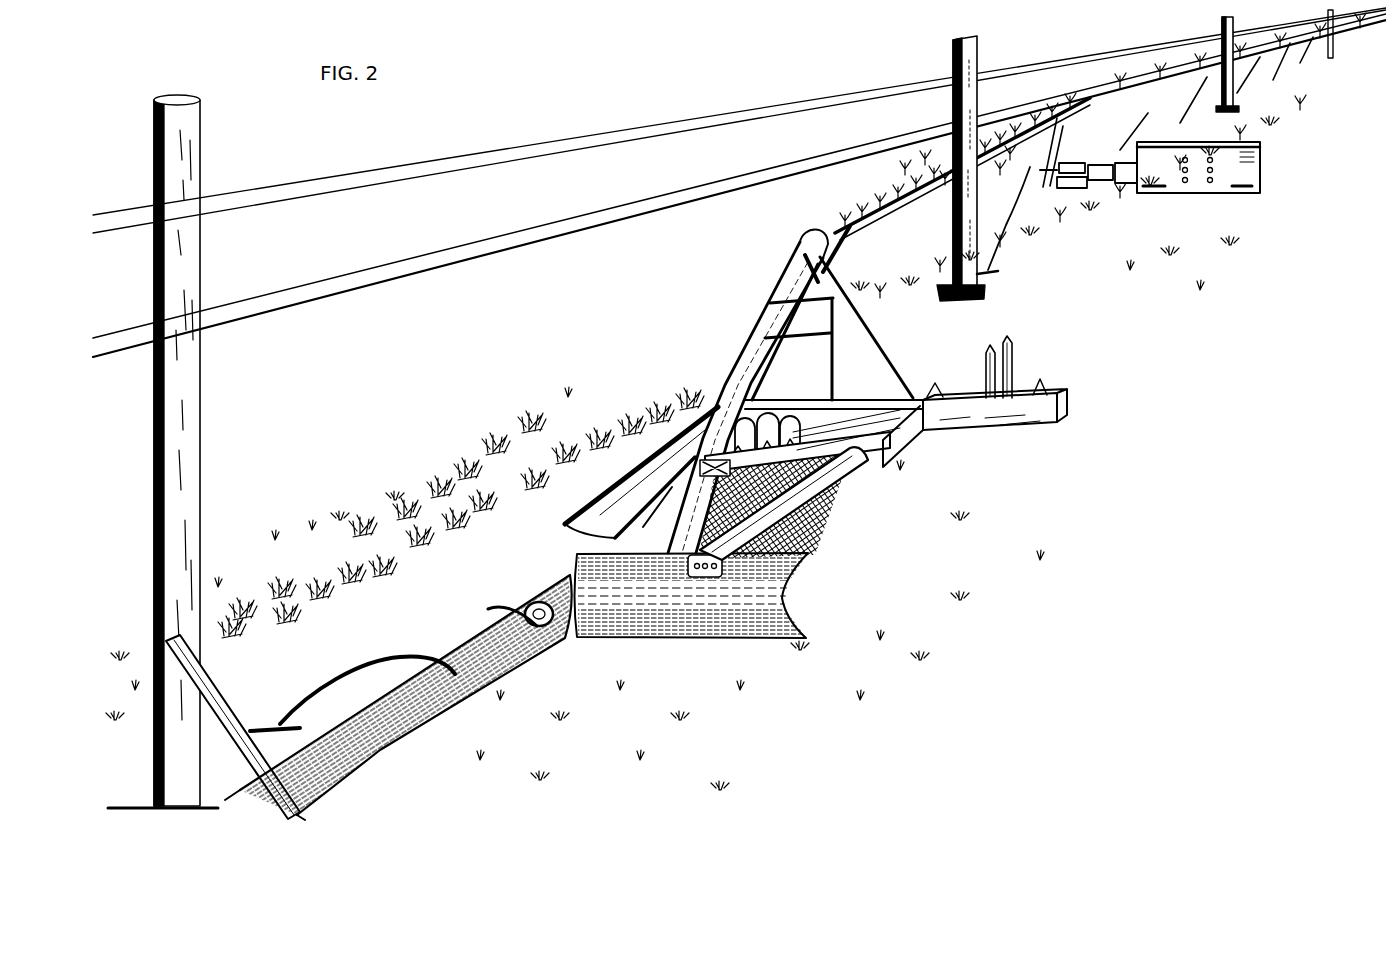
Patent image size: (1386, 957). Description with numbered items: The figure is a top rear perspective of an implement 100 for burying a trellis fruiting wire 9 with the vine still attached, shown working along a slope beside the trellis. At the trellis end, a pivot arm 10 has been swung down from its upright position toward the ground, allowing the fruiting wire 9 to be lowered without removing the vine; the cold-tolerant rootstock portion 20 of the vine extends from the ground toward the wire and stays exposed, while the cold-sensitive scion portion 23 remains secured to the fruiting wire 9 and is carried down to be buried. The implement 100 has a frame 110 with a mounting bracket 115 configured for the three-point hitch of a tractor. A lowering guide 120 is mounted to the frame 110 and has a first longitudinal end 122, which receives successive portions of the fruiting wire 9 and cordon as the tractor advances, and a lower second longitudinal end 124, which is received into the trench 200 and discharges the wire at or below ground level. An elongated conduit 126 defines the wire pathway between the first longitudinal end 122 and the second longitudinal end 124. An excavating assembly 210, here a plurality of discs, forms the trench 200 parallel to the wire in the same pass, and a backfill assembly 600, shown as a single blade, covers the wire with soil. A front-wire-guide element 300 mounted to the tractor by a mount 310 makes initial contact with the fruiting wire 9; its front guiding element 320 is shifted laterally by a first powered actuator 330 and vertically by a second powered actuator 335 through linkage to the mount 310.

The fruiting wire 9 is at (903, 196).
The pivot arm 10 is at (225, 692).
The cold-tolerant rootstock portion 20 is at (373, 667).
The cold-sensitive scion portion 23 is at (501, 612).
The implement 100 is at (677, 272).
The frame 110 is at (1058, 385).
The mounting bracket 115 is at (1000, 345).
The lowering guide 120 is at (737, 335).
The first longitudinal end 122 is at (802, 233).
The second longitudinal end 124 is at (541, 602).
The elongated conduit 126 is at (720, 398).
The trench 200 is at (600, 548).
The excavating assembly 210 is at (827, 423).
The front-wire-guide element 300 is at (1184, 185).
The mount 310 is at (1262, 153).
The front guiding element 320 is at (1028, 148).
The first powered actuator 330 is at (1075, 188).
The second powered actuator 335 is at (1077, 160).
The backfill assembly 600 is at (793, 586).